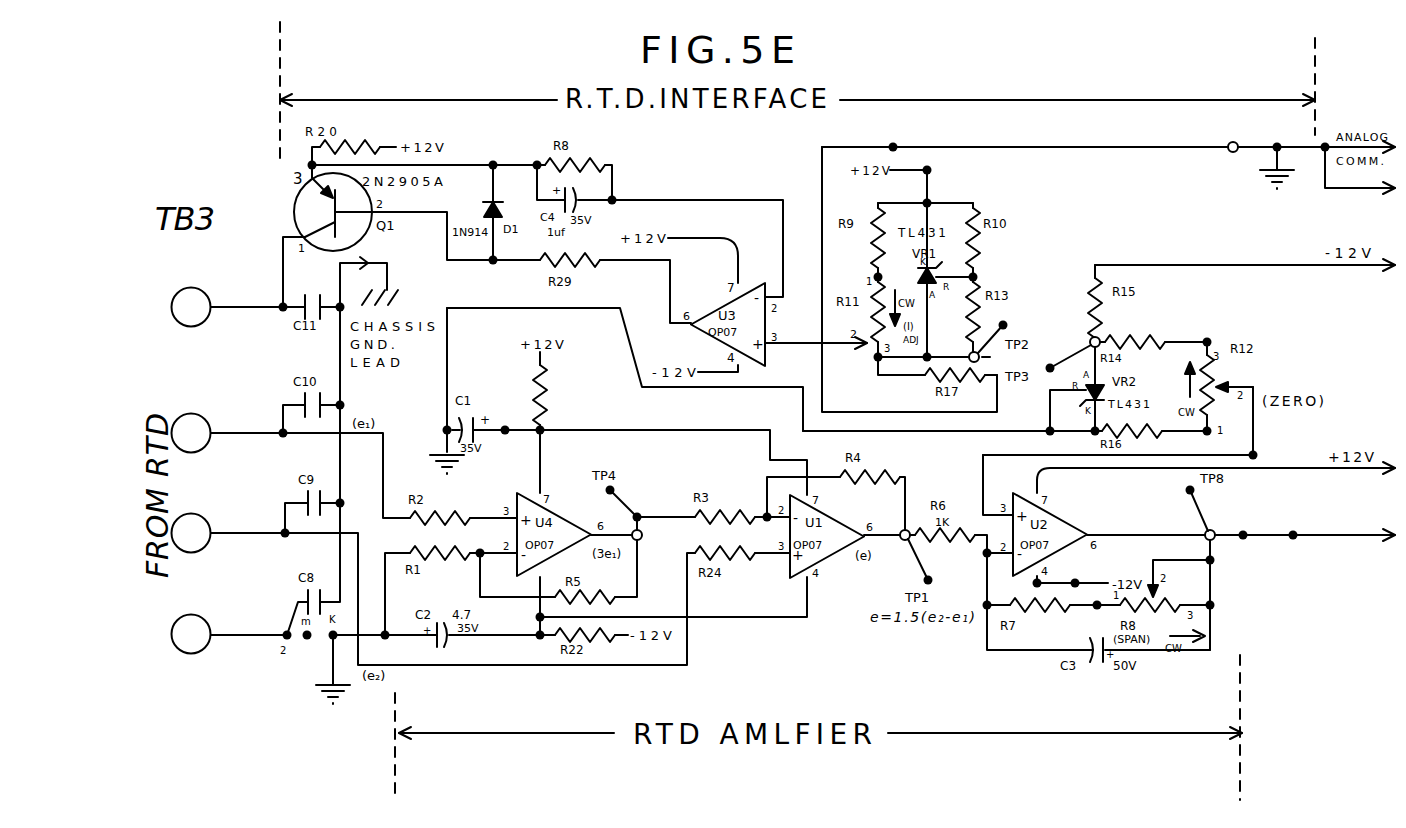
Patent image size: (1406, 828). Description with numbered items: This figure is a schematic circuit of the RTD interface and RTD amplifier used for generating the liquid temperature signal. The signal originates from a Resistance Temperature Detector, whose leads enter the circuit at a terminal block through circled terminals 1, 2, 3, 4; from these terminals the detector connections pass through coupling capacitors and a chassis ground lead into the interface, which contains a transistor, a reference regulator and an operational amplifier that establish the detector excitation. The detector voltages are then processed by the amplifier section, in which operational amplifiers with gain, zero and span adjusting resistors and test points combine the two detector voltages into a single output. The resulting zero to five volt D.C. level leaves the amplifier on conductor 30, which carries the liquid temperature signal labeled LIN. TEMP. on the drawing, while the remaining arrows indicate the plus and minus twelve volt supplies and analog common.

The conductor 30 is at (1328, 537).
The terminal block TB3 terminal 1 is at (230, 634).
The terminal block TB3 terminal 2 is at (229, 533).
The terminal block TB3 terminal 3 is at (228, 433).
The terminal block TB3 terminal 4 is at (228, 307).